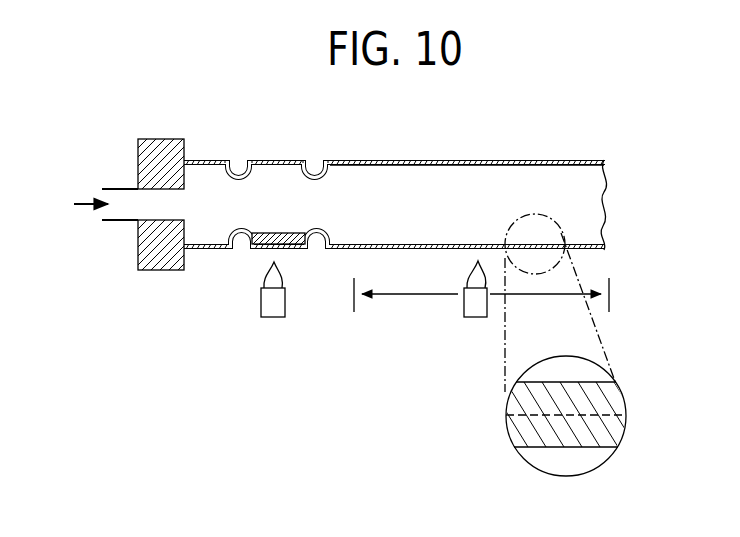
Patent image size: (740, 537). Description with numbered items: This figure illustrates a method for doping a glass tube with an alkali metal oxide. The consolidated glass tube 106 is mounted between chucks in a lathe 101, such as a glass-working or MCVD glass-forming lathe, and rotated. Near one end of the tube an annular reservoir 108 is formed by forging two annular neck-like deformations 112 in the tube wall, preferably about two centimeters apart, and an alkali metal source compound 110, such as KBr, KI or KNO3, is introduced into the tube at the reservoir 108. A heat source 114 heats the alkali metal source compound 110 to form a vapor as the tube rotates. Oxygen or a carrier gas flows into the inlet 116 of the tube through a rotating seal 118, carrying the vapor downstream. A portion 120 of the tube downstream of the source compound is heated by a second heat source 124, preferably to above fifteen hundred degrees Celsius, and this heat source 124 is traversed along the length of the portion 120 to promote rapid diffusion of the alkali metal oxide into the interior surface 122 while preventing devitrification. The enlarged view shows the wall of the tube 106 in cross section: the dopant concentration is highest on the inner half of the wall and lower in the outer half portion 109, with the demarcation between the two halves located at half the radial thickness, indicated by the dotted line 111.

The lathe 101 is at (526, 83).
The glass tube 106 is at (404, 158).
The reservoir 108 is at (256, 251).
The outer half portion 109 is at (603, 400).
The alkali metal source compound 110 is at (281, 233).
The dotted line 111 is at (520, 430).
The annular neck-like deformations 112 is at (240, 177).
The heat source 114 is at (260, 300).
The inlet 116 is at (117, 189).
The rotating seal 118 is at (165, 139).
The portion of tube downstream of source compound 120 is at (512, 160).
The interior surface 122 is at (525, 167).
The heat source 124 is at (464, 308).